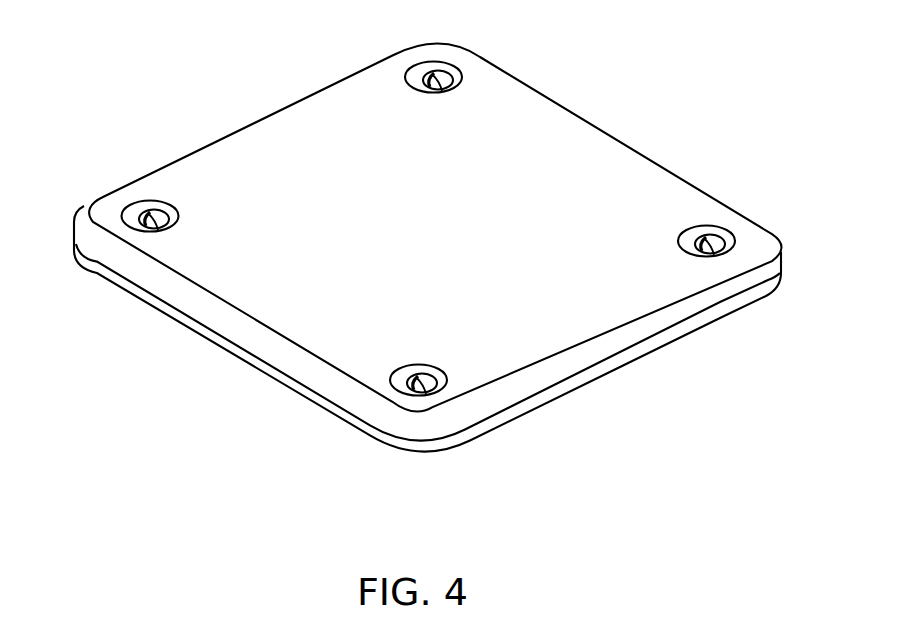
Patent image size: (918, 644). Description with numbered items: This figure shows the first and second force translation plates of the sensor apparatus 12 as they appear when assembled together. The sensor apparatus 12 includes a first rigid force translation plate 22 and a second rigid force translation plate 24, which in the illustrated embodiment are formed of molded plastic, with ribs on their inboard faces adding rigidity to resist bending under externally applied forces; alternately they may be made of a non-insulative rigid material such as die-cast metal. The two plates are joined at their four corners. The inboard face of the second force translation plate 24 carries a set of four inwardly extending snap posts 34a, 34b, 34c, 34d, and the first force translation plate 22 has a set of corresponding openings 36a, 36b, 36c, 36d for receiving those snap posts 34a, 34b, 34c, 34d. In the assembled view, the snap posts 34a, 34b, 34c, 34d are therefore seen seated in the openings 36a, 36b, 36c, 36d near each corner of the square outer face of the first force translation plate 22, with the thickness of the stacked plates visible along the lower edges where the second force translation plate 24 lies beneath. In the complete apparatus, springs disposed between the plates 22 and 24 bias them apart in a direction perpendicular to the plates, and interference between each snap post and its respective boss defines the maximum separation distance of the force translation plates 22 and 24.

The sensor apparatus 12 is at (218, 81).
The first force translation plate 22 is at (585, 162).
The second force translation plate 24 is at (562, 390).
The snap post 34a is at (688, 245).
The snap post 34b is at (418, 84).
The snap post 34c is at (135, 223).
The snap post 34d is at (402, 388).
The opening 36a is at (725, 237).
The opening 36b is at (455, 72).
The opening 36c is at (142, 212).
The opening 36d is at (412, 372).